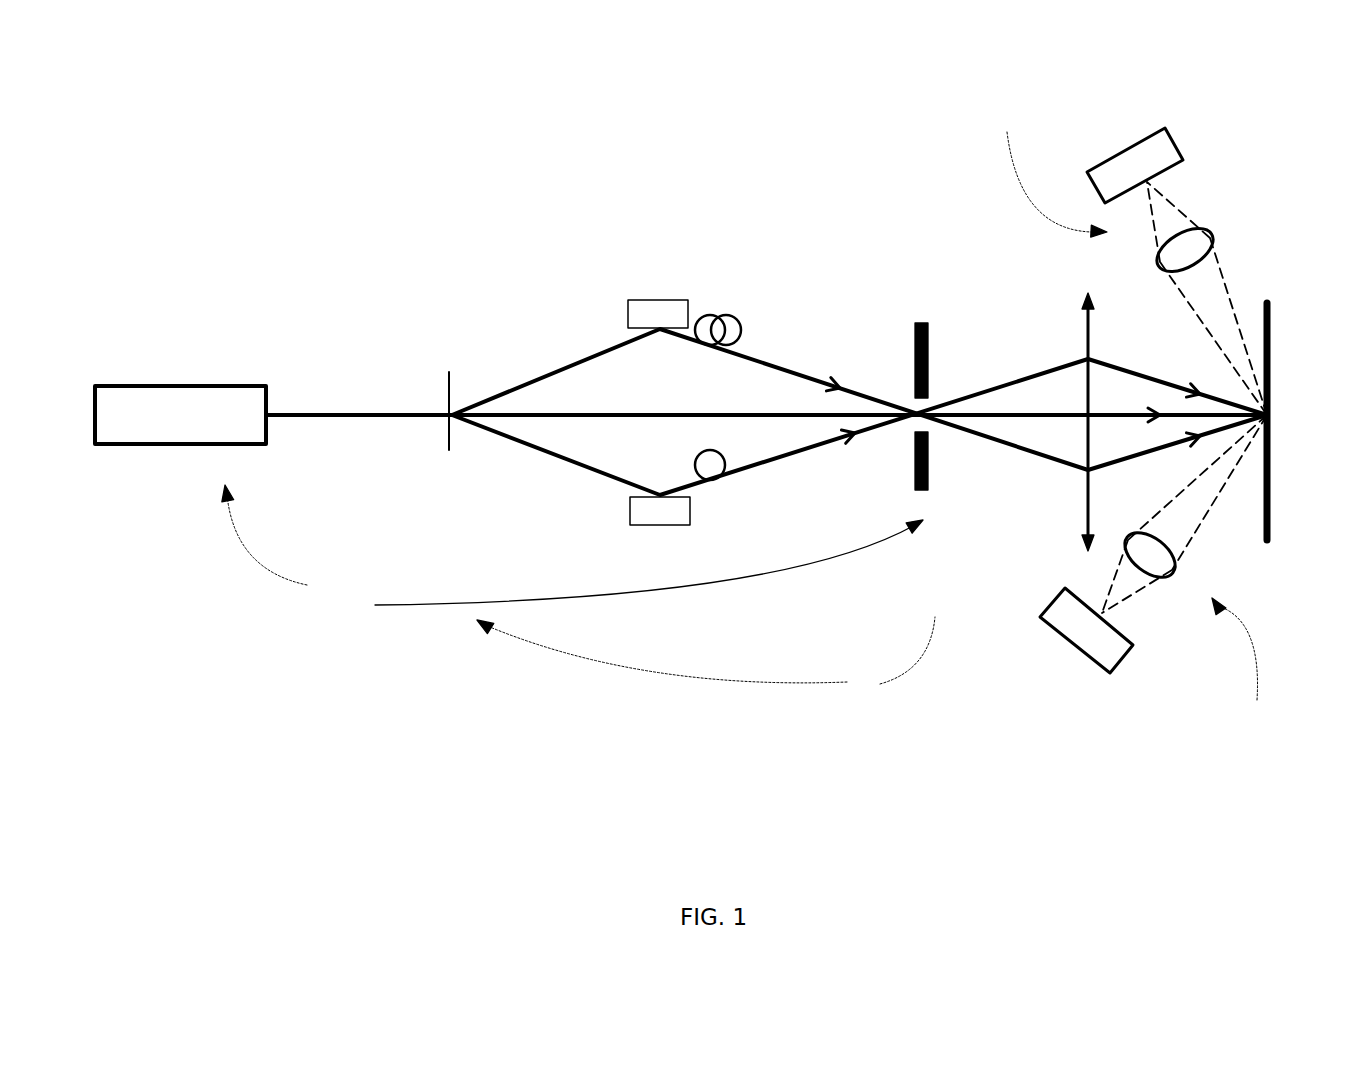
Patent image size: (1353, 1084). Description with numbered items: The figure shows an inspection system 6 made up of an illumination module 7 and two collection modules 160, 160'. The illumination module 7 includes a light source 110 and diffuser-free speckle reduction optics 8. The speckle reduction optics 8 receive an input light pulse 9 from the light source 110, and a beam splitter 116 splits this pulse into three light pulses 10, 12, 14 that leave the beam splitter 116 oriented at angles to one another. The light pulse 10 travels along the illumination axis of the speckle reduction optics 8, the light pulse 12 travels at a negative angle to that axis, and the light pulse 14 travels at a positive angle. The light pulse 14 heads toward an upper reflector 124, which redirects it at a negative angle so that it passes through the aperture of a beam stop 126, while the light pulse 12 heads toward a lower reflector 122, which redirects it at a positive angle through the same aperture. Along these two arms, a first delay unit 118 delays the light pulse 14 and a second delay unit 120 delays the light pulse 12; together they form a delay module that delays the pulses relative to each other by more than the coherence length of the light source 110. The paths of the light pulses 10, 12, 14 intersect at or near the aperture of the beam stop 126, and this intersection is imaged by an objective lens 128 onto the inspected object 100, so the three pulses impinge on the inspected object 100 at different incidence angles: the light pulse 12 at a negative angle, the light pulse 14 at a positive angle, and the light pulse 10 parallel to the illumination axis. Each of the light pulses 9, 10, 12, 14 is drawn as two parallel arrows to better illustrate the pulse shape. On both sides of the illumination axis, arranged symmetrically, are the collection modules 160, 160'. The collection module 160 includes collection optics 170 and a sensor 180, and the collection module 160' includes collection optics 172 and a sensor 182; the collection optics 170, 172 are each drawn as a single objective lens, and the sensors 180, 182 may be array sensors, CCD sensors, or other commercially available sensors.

The inspection system 6 is at (274, 844).
The illumination module 7 is at (279, 546).
The diffuser-free speckle reduction optics 8 is at (655, 608).
The input light pulse 9 is at (347, 418).
The light pulse 10 is at (522, 420).
The light pulse 12 is at (525, 450).
The light pulse 14 is at (575, 362).
The inspected object 100 is at (1263, 317).
The light source 110 is at (157, 382).
The beam splitter 116 is at (449, 372).
The first delay unit 118 is at (730, 322).
The second delay unit 120 is at (713, 478).
The lower reflector 122 is at (679, 523).
The upper reflector 124 is at (677, 326).
The beam stop 126 is at (925, 322).
The objective lens 128 is at (1082, 310).
The collection module 160 is at (1053, 167).
The collection module 160' is at (1250, 662).
The collection optics 170 is at (1213, 232).
The collection optics 172 is at (1173, 575).
The sensor 180 is at (1176, 145).
The sensor 182 is at (1127, 662).